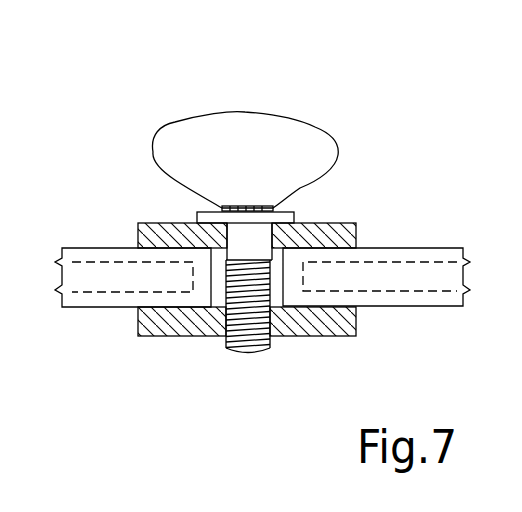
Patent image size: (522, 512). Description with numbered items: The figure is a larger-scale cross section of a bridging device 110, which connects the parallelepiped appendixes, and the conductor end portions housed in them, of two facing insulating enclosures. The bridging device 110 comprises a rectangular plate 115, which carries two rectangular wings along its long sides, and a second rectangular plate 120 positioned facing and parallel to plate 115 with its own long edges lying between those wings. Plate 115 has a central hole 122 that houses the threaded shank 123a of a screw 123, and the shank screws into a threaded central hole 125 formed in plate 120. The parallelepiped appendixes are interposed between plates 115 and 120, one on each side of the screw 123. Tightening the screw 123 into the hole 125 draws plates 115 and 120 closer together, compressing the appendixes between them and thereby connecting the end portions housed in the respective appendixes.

The bridging device 110 is at (270, 233).
The rectangular plate 115 is at (348, 235).
The rectangular plate 120 is at (316, 325).
The central hole 122 is at (220, 207).
The screw 123 is at (291, 113).
The threaded shank 123a is at (248, 298).
The threaded central hole 125 is at (280, 298).